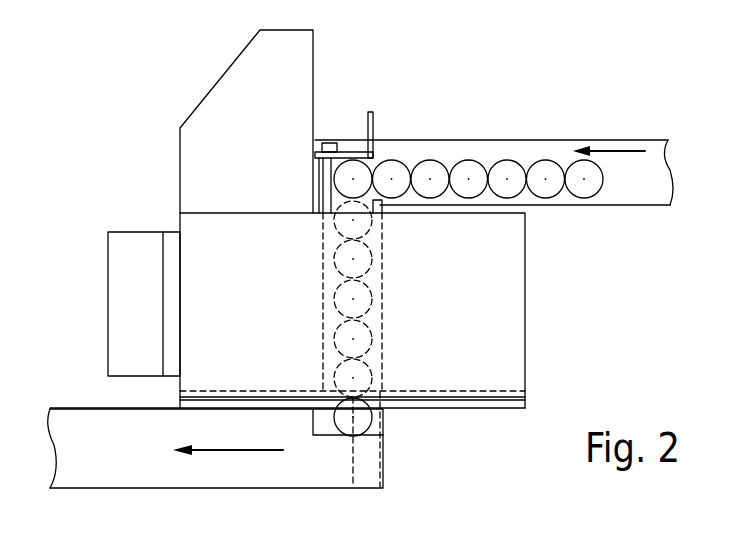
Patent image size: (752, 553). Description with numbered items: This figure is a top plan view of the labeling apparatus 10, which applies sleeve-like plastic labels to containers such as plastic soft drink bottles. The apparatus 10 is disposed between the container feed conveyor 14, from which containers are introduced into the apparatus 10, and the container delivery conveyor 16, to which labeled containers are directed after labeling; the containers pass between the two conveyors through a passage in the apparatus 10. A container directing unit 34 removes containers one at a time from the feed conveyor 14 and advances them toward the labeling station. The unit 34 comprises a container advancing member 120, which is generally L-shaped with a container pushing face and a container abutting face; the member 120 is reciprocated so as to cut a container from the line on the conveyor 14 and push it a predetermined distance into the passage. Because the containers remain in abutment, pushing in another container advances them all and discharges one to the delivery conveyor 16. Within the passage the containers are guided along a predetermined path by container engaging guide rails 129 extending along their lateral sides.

The labeling apparatus 10 is at (163, 170).
The container directing unit 34 is at (248, 90).
The container advancing member 120 is at (340, 150).
The container feed conveyor 14 is at (430, 152).
The container engaging guide rails 129 is at (323, 275).
The container delivery conveyor 16 is at (163, 477).